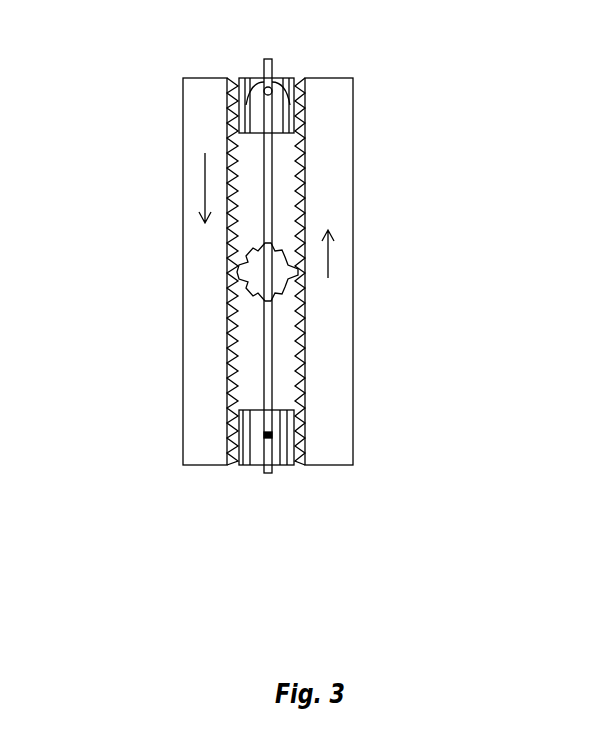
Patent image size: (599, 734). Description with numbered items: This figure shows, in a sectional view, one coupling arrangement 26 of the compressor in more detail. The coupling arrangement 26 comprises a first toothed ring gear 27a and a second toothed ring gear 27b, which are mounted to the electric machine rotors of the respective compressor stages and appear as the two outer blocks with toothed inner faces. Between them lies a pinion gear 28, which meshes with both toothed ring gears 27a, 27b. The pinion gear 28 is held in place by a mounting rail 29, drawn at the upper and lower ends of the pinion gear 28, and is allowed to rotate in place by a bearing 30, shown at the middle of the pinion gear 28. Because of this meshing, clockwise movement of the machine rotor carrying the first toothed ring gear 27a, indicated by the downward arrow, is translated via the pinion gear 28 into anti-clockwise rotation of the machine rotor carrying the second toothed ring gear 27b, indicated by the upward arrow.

The coupling arrangement 26 is at (435, 197).
The first toothed ring gear 27a is at (183, 128).
The second toothed ring gear 27b is at (353, 132).
The pinion gear 28 is at (282, 63).
The mounting rail 29 is at (272, 180).
The bearing 30 is at (265, 272).